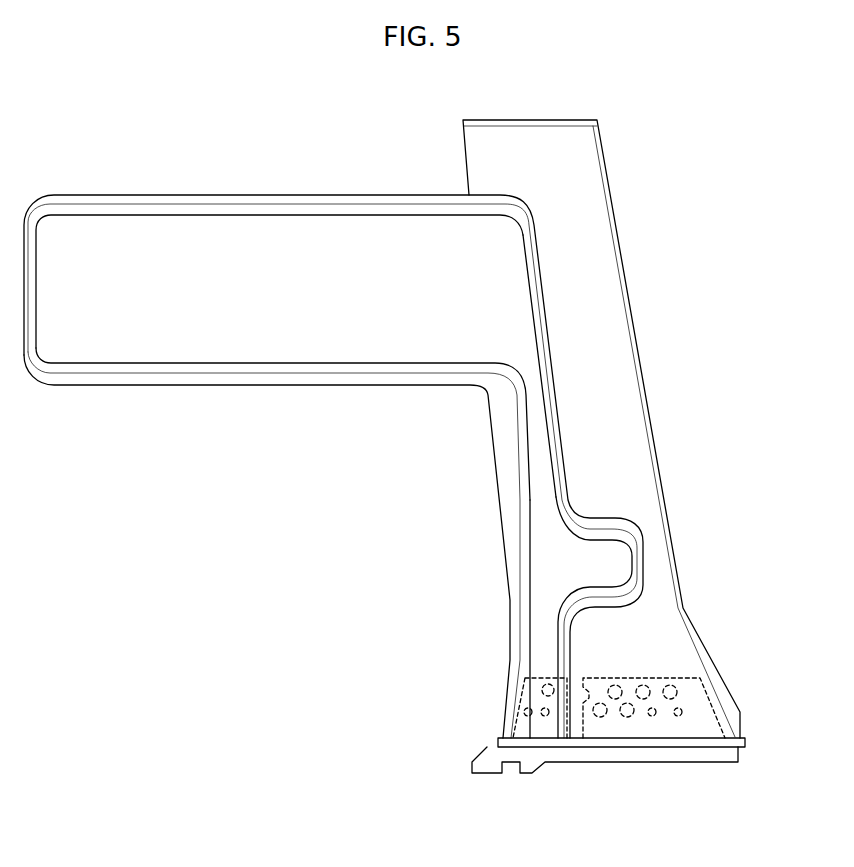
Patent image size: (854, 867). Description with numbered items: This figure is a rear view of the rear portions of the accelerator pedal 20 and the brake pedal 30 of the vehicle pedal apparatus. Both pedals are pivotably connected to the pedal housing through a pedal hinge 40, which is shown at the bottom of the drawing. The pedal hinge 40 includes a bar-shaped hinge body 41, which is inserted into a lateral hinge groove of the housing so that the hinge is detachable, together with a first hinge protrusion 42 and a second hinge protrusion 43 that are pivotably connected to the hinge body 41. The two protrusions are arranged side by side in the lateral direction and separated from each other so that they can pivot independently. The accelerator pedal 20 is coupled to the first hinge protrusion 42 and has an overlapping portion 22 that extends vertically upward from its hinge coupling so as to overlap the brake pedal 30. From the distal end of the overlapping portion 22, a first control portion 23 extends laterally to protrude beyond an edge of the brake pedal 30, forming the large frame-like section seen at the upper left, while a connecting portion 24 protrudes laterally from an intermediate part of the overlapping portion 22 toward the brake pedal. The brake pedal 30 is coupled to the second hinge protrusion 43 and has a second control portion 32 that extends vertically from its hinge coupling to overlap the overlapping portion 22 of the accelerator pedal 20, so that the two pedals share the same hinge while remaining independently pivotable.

The accelerator pedal 20 is at (190, 186).
The overlapping portion 22 is at (544, 497).
The first control portion 23 is at (132, 243).
The connecting portion 24 is at (610, 570).
The brake pedal 30 is at (644, 280).
The second control portion 32 is at (613, 370).
The pedal hinge 40 is at (566, 774).
The hinge body 41 is at (655, 755).
The first hinge protrusion 42 is at (549, 677).
The second hinge protrusion 43 is at (656, 678).